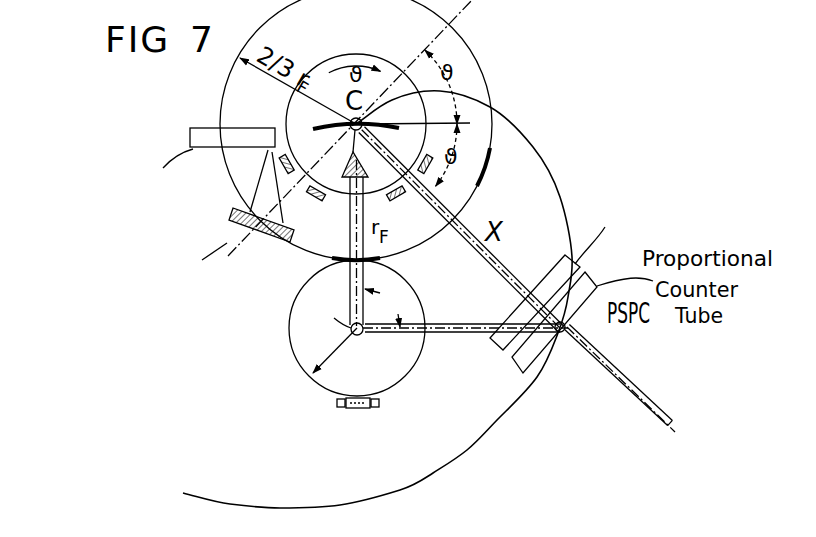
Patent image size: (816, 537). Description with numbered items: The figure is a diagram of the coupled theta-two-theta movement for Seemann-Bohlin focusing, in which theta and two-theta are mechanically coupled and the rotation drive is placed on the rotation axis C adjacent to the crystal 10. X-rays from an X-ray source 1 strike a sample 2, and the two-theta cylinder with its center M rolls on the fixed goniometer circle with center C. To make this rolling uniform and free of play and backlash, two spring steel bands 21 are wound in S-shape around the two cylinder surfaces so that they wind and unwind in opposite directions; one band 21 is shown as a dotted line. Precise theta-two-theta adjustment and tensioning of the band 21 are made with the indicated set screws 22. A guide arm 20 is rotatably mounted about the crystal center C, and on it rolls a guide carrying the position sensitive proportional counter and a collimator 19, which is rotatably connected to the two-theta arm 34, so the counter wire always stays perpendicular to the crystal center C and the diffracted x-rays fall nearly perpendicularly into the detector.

The X-ray source 1 is at (190, 137).
The sample 2 is at (233, 210).
The crystal 10 is at (313, 127).
The collimator 19 is at (567, 258).
The guide arm 20 is at (648, 407).
The steel band 21 is at (291, 340).
The set screw 22 is at (357, 409).
The 2θ-arm 34 is at (452, 334).